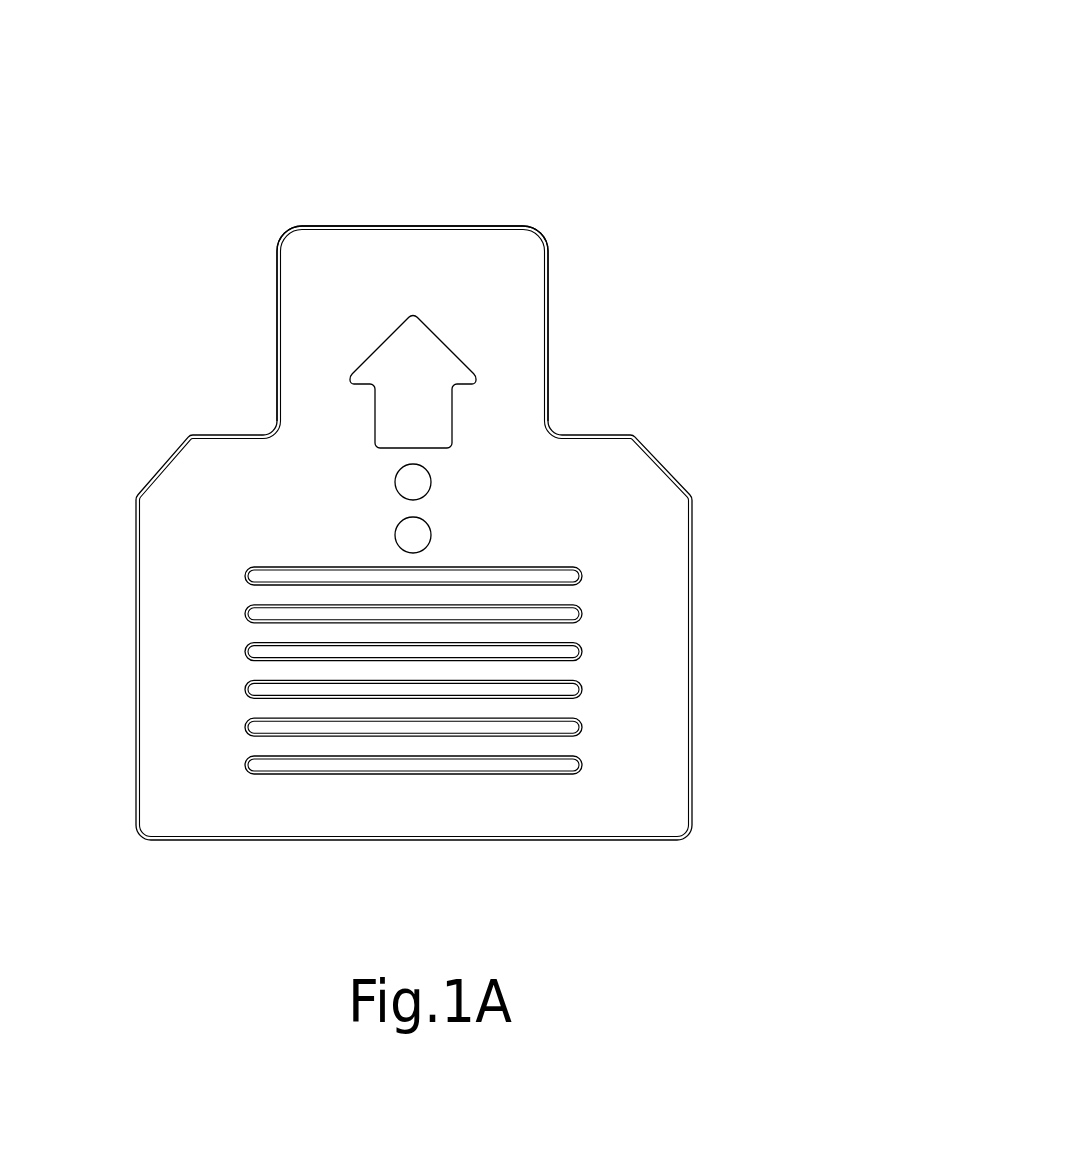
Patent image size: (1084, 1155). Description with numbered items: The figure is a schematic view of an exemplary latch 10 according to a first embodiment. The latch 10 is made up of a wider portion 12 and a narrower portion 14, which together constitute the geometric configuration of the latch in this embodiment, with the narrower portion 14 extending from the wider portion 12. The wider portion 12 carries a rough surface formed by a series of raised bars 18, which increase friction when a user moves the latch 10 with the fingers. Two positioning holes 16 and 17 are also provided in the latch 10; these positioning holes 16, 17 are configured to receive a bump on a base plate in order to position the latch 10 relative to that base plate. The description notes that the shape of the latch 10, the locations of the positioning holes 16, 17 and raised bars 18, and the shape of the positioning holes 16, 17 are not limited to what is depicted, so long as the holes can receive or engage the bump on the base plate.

The latch 10 is at (600, 198).
The wider portion 12 is at (692, 755).
The narrower portion 14 is at (549, 333).
The positioning hole 16 is at (413, 538).
The positioning hole 17 is at (405, 487).
The raised bars 18 is at (571, 574).